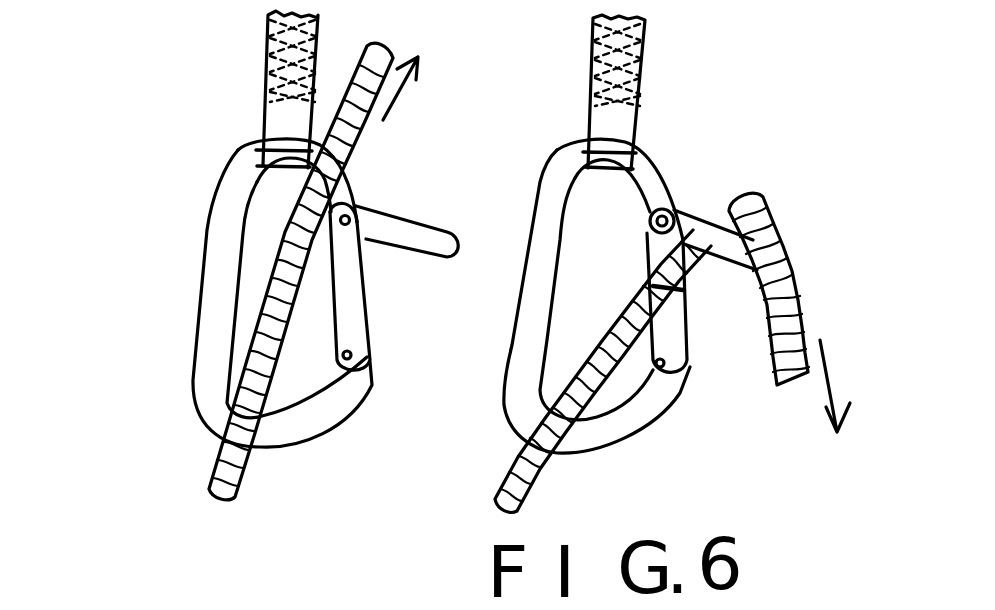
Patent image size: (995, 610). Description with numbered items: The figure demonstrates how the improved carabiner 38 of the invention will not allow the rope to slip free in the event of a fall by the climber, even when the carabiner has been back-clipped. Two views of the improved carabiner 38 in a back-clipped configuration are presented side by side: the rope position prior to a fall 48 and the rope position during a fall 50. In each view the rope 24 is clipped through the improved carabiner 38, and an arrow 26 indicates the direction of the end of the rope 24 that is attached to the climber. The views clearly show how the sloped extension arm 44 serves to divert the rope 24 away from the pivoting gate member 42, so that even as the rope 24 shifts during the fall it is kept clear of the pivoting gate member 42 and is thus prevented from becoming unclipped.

The rope 24 is at (575, 487).
The arrow 26 is at (648, 244).
The improved carabiner 38 is at (500, 313).
The pivoting gate member 42 is at (714, 375).
The sloped extension arm 44 is at (777, 140).
The rope position prior to a fall 48 is at (192, 148).
The rope position during a fall 50 is at (538, 137).